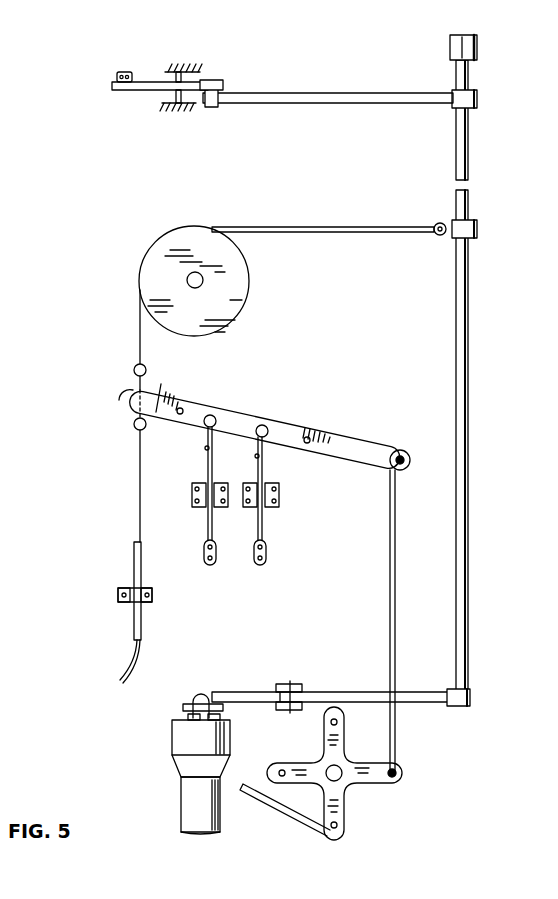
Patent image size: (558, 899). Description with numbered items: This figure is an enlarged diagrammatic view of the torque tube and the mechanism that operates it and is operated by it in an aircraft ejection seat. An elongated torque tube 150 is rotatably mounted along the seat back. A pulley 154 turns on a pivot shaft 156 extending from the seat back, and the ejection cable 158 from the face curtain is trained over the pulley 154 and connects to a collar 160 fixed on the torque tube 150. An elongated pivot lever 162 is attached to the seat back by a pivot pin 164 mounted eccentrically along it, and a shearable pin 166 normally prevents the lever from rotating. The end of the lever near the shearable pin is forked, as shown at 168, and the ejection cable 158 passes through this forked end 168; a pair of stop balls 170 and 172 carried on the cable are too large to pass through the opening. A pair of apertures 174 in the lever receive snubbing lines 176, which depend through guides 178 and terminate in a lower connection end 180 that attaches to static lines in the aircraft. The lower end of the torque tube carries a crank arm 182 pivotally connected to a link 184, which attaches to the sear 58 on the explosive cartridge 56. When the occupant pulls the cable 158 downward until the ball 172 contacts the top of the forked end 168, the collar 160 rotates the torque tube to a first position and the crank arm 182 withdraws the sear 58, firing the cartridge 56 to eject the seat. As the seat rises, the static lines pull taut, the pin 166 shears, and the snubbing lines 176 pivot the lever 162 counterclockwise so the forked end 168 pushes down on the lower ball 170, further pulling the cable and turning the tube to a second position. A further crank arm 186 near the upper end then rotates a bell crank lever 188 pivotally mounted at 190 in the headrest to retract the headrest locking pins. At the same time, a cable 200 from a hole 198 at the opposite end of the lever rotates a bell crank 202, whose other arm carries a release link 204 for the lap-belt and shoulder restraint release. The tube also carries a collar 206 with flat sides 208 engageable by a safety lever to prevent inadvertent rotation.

The explosive cartridge means 56 is at (200, 806).
The retractable sear 58 is at (184, 707).
The torque tube 150 is at (466, 650).
The pulley 154 is at (236, 312).
The pivot shaft 156 is at (200, 280).
The ejection cable 158 is at (140, 520).
The collar 160 is at (478, 227).
The pivot lever 162 is at (335, 440).
The pivot pin 164 is at (310, 438).
The shearable pin 166 is at (183, 410).
The forked end 168 is at (124, 404).
The lower stop ball 170 is at (146, 426).
The upper stop ball 172 is at (134, 370).
The apertures 174 is at (262, 426).
The snubbing lines 176 is at (258, 532).
The guides 178 is at (192, 500).
The lower connection end 180 is at (204, 560).
The crank arm 182 is at (428, 702).
The link 184 is at (246, 692).
The further crank arm 186 is at (370, 103).
The bell crank lever 188 is at (136, 90).
The pivot mounting of bell crank lever 190 is at (184, 105).
The hole 198 is at (402, 450).
The cable 200 is at (396, 600).
The bell crank 202 is at (340, 786).
The release link or cable 204 is at (296, 812).
The collar 206 is at (480, 49).
The flat sides 208 is at (452, 48).